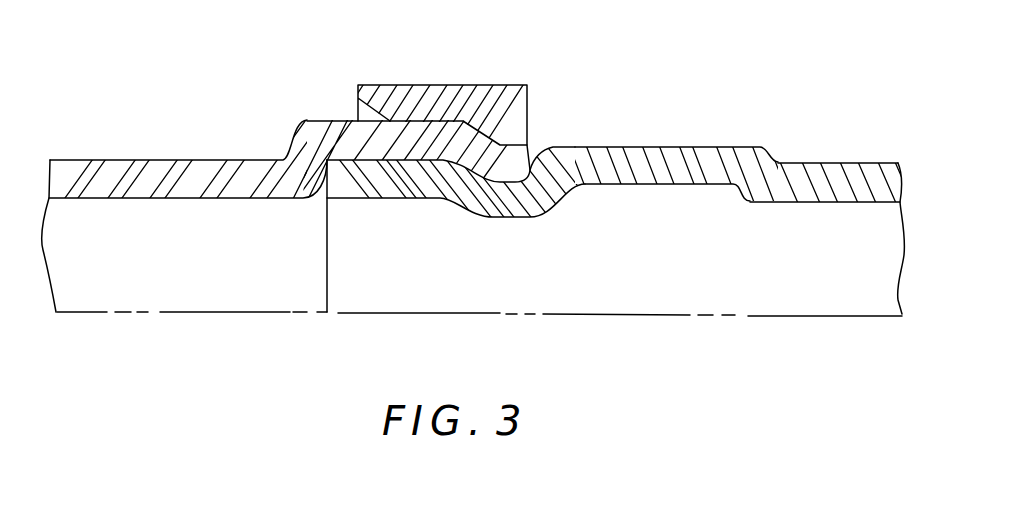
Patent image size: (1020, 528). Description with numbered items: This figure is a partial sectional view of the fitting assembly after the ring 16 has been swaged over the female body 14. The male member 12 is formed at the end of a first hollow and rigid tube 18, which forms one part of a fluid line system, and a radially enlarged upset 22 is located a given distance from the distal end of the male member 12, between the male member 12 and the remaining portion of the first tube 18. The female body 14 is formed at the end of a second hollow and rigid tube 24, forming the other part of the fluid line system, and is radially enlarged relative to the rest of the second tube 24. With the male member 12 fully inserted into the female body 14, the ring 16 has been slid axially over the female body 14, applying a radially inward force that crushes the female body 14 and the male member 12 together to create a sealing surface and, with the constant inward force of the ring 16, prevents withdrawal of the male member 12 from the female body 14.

The male member 12 is at (420, 183).
The female body 14 is at (340, 120).
The ring 16 is at (460, 86).
The first hollow and rigid tube 18 is at (817, 162).
The radially enlarged upset 22 is at (650, 145).
The second hollow and rigid tube 24 is at (153, 160).